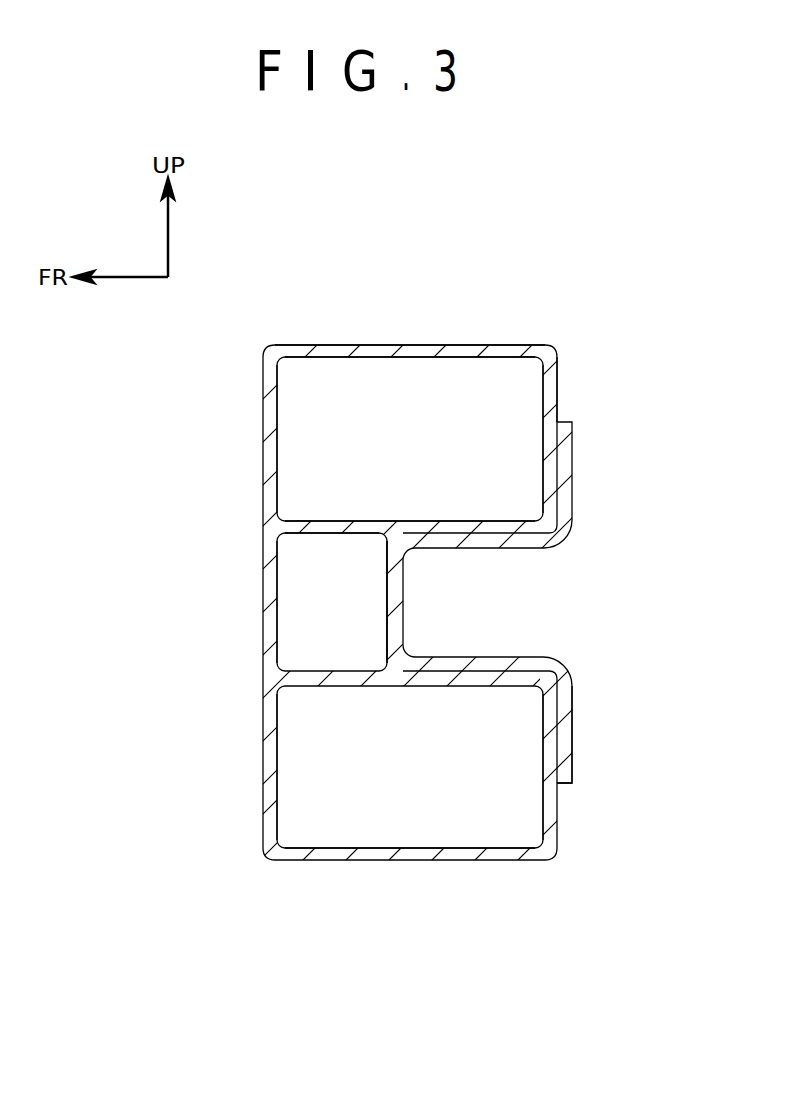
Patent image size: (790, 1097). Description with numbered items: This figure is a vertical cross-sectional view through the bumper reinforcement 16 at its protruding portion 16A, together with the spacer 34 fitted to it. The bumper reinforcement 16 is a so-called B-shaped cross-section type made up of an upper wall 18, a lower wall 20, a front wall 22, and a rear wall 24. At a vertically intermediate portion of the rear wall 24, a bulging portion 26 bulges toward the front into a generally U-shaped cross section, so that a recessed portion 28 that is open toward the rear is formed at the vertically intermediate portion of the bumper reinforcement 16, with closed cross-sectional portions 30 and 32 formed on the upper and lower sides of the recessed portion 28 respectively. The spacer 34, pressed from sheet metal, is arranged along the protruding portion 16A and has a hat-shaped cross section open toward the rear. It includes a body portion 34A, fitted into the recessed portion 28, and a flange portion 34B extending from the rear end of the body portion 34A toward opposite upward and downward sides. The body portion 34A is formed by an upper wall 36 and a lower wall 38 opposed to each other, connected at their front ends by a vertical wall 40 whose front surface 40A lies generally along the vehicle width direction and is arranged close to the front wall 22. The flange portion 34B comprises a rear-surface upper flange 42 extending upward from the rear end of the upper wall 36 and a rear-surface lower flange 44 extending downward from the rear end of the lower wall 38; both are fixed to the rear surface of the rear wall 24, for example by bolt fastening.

The bumper reinforcement 16 is at (410, 336).
The protruding portion 16A is at (323, 345).
The upper wall 18 is at (497, 345).
The lower wall 20 is at (420, 862).
The front wall 22 is at (263, 457).
The rear wall 24 is at (560, 388).
The bulging portion 26 is at (336, 520).
The recessed portion 28 is at (362, 602).
The closed cross-sectional portion 30 is at (446, 447).
The closed cross-sectional portion 32 is at (441, 785).
The spacer 34 is at (582, 699).
The body portion 34A is at (530, 658).
The flange portion 34B is at (573, 450).
The upper wall 36 is at (523, 550).
The lower wall 38 is at (490, 655).
The vertical wall 40 is at (403, 592).
The front surface 40A is at (387, 630).
The rear-surface upper flange 42 is at (573, 497).
The rear-surface lower flange 44 is at (572, 740).